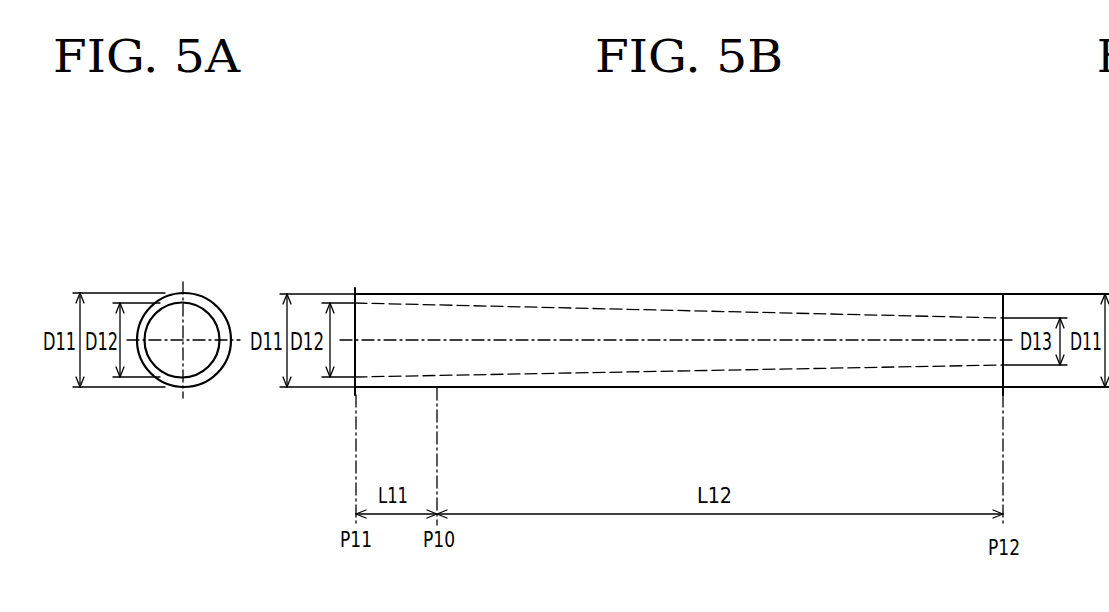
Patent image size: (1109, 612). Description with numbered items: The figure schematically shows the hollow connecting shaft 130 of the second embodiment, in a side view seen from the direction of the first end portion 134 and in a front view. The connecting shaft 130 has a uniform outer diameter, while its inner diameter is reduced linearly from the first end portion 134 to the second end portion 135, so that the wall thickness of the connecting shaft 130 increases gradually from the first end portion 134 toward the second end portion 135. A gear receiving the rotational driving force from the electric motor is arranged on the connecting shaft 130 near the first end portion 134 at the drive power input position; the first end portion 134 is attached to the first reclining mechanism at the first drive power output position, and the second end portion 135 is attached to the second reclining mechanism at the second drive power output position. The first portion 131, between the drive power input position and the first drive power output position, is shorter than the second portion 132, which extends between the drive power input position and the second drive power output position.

The connecting shaft 130 is at (708, 262).
The first portion 131 is at (391, 388).
The second portion 132 is at (792, 388).
The first end portion 134 is at (372, 294).
The second end portion 135 is at (985, 294).